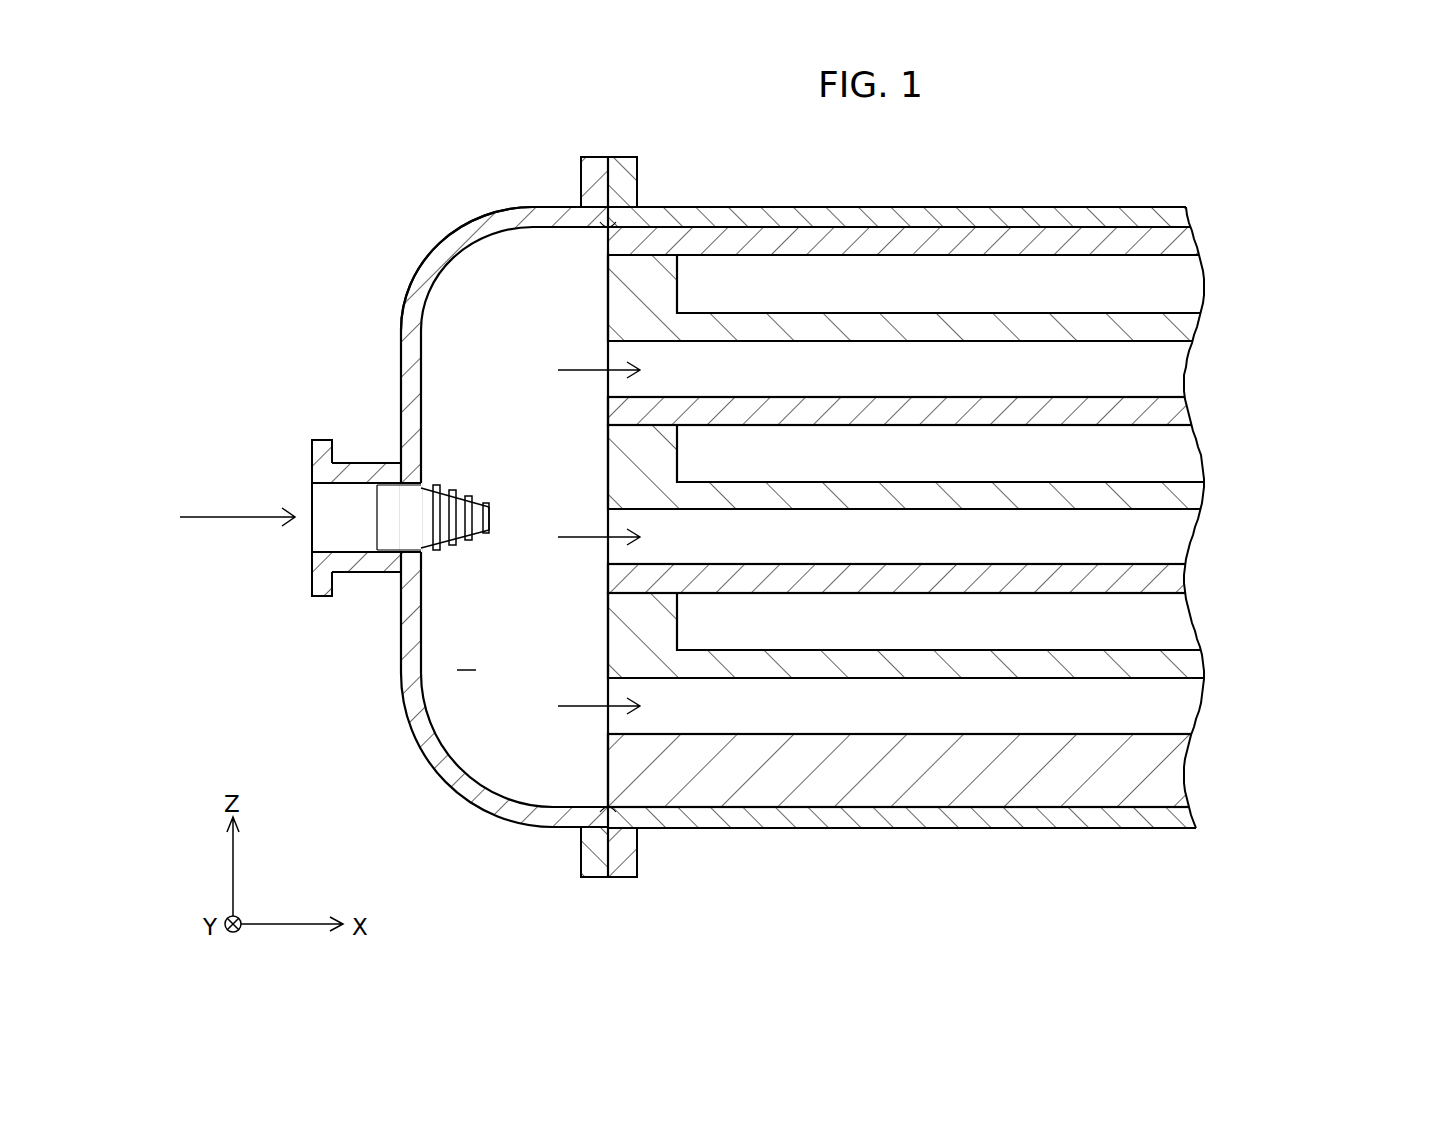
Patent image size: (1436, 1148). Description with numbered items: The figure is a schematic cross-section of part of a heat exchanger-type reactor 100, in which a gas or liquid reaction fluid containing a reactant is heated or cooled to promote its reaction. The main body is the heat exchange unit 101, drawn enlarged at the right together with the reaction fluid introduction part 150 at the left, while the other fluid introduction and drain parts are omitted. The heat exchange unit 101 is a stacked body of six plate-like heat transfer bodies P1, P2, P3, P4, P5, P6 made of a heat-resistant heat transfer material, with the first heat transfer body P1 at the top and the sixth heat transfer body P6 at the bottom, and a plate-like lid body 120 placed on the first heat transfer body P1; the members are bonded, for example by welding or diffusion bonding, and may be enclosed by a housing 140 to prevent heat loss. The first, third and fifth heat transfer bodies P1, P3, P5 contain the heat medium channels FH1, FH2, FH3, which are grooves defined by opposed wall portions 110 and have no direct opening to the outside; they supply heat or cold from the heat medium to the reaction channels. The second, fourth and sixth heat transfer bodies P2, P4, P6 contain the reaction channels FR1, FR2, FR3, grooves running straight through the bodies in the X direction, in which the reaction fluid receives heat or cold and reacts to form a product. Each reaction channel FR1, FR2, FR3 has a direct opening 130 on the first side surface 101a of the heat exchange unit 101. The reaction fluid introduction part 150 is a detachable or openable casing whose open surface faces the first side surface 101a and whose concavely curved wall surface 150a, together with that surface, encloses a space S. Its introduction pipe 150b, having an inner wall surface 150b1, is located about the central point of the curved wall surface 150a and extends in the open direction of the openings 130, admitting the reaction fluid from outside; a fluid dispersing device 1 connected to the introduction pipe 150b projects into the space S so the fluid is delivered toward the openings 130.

The reactor 100 is at (1145, 157).
The heat exchange unit 101 is at (950, 522).
The first side surface 101a is at (608, 772).
The wall portion 110 is at (620, 298).
The lid body 120 is at (1190, 243).
The direct opening 130 is at (608, 395).
The housing 140 is at (1065, 830).
The reaction fluid introduction part 150 is at (417, 240).
The curved wall surface 150a is at (500, 212).
The introduction pipe 150b is at (358, 562).
The inner wall surface 150b1 is at (330, 490).
The fluid dispersing device 1 is at (465, 466).
The space S is at (466, 657).
The first heat medium channel FH1 is at (739, 280).
The first reaction channel FR1 is at (827, 370).
The second heat medium channel FH2 is at (918, 455).
The second reaction channel FR2 is at (763, 540).
The third heat medium channel FH3 is at (855, 625).
The third reaction channel FR3 is at (945, 717).
The first heat transfer body P1 is at (1222, 258).
The second heat transfer body P2 is at (1222, 343).
The third heat transfer body P3 is at (1222, 427).
The fourth heat transfer body P4 is at (1222, 512).
The fifth heat transfer body P5 is at (1222, 595).
The sixth heat transfer body P6 is at (1222, 683).